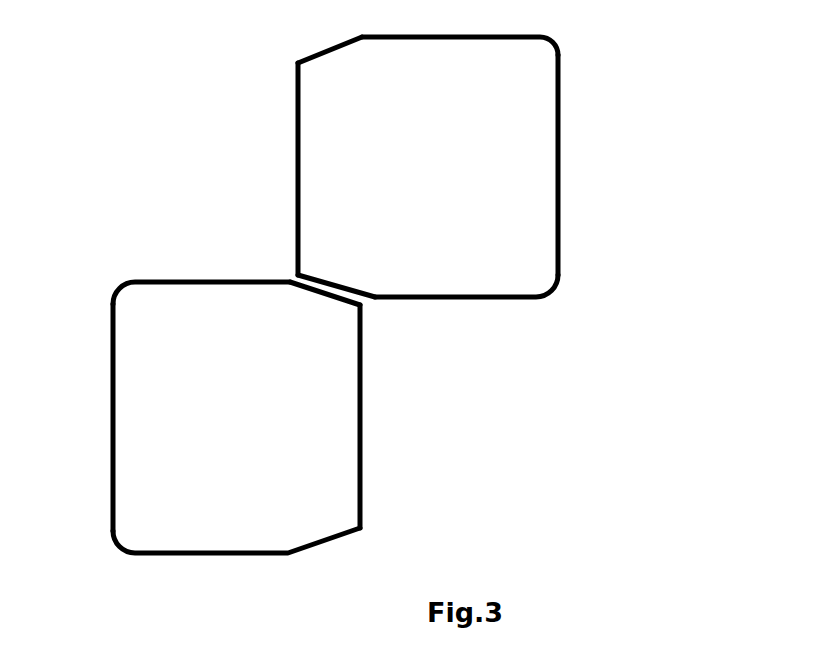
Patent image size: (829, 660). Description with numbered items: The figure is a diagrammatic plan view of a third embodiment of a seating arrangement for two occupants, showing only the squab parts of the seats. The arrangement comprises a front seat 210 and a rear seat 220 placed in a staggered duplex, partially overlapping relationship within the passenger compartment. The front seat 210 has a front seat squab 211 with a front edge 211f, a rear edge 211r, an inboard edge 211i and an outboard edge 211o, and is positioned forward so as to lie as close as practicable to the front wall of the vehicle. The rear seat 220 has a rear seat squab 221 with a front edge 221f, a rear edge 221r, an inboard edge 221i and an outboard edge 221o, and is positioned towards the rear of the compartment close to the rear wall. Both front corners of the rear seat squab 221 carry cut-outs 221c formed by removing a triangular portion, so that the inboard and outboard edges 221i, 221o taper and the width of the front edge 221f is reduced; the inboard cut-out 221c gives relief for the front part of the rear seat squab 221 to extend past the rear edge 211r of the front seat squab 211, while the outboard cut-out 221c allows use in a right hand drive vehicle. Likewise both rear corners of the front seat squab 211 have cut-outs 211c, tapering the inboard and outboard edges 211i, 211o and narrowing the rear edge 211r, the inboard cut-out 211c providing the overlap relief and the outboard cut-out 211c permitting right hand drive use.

The front seat 210 is at (365, 475).
The front seat squab 211 is at (112, 453).
The cut-outs of front seat squab 211c is at (327, 295).
The front edge of front seat squab 211f is at (110, 410).
The rear edge of front seat squab 211r is at (365, 398).
The inboard edge of front seat squab 211i is at (148, 278).
The outboard edge of front seat squab 211o is at (191, 559).
The rear seat 220 is at (360, 37).
The rear seat squab 221 is at (296, 90).
The cut-outs of rear seat squab 221c is at (322, 51).
The front edge of rear seat squab 221f is at (294, 126).
The rear edge of rear seat squab 221r is at (562, 239).
The inboard edge of rear seat squab 221i is at (490, 305).
The outboard edge of rear seat squab 221o is at (477, 38).